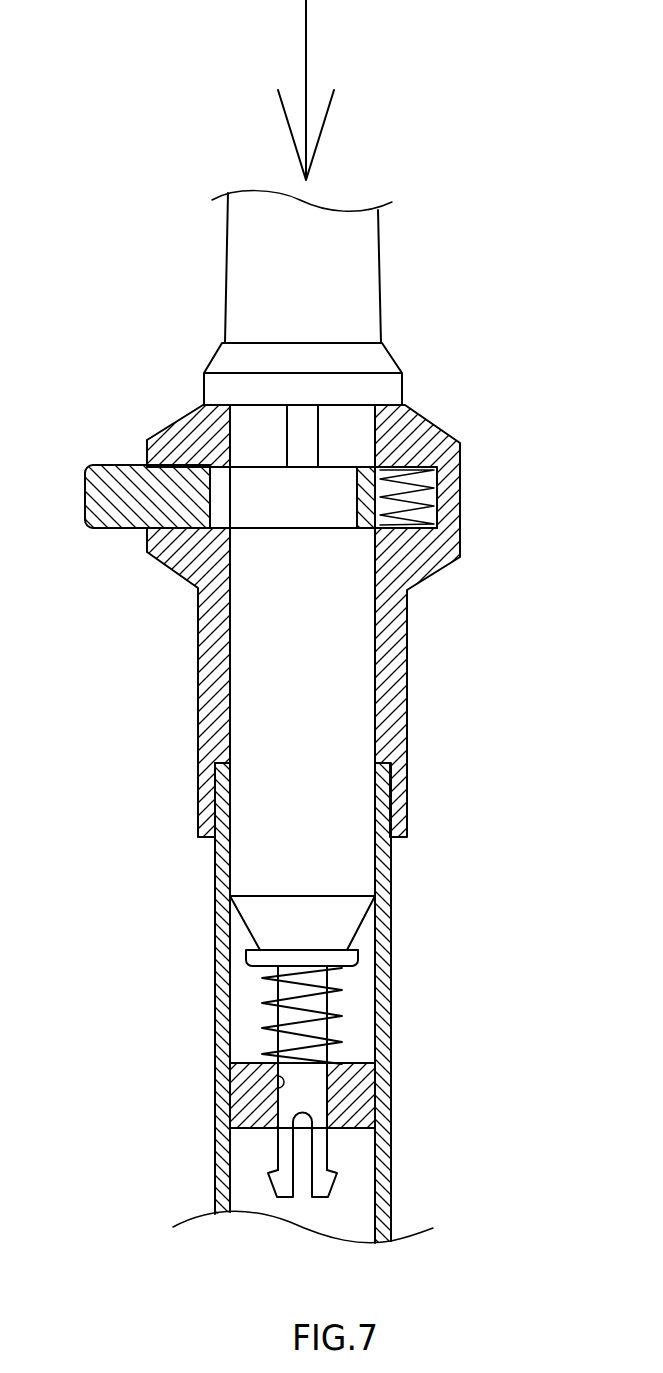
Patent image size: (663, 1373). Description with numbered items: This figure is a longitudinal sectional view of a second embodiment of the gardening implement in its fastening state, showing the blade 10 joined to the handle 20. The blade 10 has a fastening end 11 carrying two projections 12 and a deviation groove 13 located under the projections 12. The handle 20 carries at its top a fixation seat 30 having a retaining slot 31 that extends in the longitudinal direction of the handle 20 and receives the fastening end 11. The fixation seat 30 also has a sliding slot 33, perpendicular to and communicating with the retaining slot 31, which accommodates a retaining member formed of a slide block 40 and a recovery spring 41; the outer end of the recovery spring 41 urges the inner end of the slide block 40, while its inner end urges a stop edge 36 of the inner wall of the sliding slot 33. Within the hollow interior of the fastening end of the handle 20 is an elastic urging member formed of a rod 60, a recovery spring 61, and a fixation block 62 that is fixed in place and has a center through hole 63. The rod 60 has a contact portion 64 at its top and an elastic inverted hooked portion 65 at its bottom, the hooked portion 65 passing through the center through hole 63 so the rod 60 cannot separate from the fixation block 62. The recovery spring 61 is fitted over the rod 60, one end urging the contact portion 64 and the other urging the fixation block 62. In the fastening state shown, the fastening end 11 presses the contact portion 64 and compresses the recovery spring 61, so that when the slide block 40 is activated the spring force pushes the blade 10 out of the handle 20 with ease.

The blade 10 is at (358, 283).
The fastening end 11 is at (355, 648).
The projections 12 is at (310, 418).
The deviation groove 13 is at (415, 465).
The handle 20 is at (391, 920).
The fixation seat 30 is at (460, 463).
The retaining slot 31 is at (225, 343).
The sliding slot 33 is at (168, 475).
The stop edge 36 is at (427, 530).
The slide block 40 is at (125, 513).
The recovery spring 41 is at (420, 496).
The rod 60 is at (277, 990).
The recovery spring 61 is at (273, 1028).
The fixation block 62 is at (357, 1097).
The center through hole 63 is at (275, 1098).
The contact portion 64 is at (258, 960).
The elastic inverted hooked portion 65 is at (323, 1183).